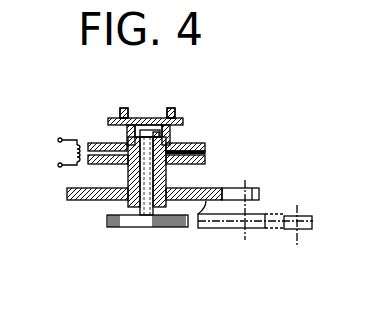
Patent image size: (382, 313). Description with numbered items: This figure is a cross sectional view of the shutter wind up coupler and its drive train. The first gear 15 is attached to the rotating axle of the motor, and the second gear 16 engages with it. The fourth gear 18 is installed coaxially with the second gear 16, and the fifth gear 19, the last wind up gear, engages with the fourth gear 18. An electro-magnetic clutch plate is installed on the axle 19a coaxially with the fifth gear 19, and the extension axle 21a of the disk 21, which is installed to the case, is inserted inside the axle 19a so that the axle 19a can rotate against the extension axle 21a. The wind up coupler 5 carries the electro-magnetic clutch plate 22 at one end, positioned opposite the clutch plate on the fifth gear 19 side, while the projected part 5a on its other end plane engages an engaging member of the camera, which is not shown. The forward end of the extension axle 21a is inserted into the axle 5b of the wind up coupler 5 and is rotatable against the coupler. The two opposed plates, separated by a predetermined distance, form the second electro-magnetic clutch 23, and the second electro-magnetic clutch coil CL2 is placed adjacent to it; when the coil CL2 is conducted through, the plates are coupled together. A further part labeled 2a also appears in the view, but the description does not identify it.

The second electro-magnetic clutch coil CL2 is at (59, 139).
The electro-magnetic clutch plate 22 is at (89, 143).
The armature disc 2a is at (207, 163).
The second electro-magnetic clutch 23 is at (207, 148).
The axle 19a is at (163, 182).
The fourth gear 18 is at (252, 188).
The wind up coupler 5 is at (182, 114).
The projected part 5a is at (125, 108).
The axle of wind up coupler 5b is at (170, 140).
The extension axle 21a is at (136, 205).
The disk 21 is at (153, 227).
The fifth gear 19 is at (203, 229).
The second gear 16 is at (227, 233).
The first gear 15 is at (288, 232).